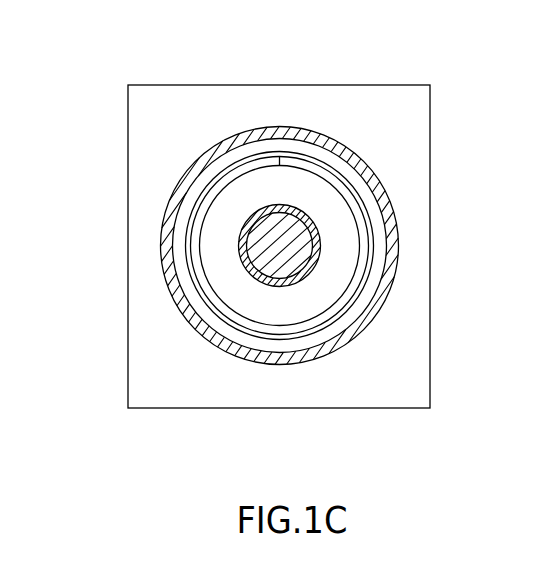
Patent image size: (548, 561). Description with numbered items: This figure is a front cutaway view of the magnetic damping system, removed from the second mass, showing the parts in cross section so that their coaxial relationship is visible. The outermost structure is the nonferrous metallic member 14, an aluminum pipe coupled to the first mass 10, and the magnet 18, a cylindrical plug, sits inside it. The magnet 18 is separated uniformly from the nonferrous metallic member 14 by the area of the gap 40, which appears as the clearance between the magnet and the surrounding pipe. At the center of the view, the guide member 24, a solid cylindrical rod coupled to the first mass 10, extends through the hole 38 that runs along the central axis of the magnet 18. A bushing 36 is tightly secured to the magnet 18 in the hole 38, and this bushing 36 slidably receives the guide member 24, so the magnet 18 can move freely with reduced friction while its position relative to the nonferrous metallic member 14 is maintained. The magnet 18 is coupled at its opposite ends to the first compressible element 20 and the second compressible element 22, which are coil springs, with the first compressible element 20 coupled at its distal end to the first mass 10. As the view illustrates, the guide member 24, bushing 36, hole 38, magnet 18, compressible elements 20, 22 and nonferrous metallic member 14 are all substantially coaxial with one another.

The first mass 10 is at (295, 85).
The nonferrous metallic member 14 is at (370, 163).
The magnet 18 is at (366, 207).
The first compressible element 20 is at (280, 246).
The second compressible element 22 is at (375, 262).
The guide member 24 is at (256, 245).
The bushing 36 is at (265, 264).
The hole 38 is at (322, 253).
The gap 40 is at (243, 151).